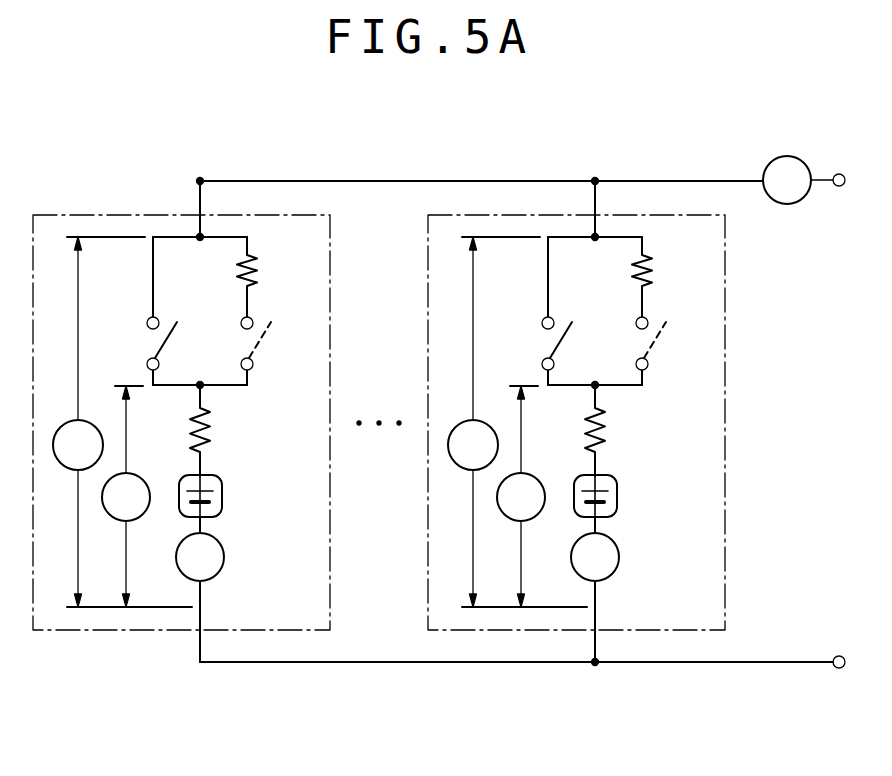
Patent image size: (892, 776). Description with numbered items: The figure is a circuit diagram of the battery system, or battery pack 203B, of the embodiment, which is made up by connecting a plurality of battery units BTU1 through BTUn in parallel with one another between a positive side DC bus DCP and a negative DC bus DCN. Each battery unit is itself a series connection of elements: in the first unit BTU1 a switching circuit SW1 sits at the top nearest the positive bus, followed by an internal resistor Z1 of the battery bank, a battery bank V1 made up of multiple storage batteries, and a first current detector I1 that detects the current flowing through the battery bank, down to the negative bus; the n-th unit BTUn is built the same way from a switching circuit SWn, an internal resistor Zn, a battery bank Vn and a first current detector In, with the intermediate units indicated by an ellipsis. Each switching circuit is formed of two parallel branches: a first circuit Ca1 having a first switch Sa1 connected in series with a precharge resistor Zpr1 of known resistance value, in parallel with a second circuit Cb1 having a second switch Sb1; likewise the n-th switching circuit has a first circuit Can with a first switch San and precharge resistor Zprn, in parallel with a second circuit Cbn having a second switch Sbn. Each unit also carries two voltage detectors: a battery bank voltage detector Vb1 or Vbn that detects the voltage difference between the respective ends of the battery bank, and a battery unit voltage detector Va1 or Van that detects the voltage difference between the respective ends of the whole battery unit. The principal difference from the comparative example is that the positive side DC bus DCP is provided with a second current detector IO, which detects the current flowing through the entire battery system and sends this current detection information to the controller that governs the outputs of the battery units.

The battery pack 203B is at (552, 123).
The positive side DC bus DCP is at (382, 178).
The negative DC bus DCN is at (380, 663).
The second current detector IO is at (804, 180).
The battery unit BTU1 is at (194, 420).
The battery unit BTUn is at (589, 422).
The switching circuit SW1 is at (225, 285).
The switching circuit SWn is at (620, 285).
The second switch Sb1 is at (138, 311).
The first switch Sa1 is at (233, 351).
The second circuit Cb1 is at (144, 299).
The first circuit Ca1 is at (239, 299).
The precharge resistor Zpr1 is at (278, 277).
The internal resistor Z1 is at (218, 430).
The battery bank V1 is at (220, 496).
The first current detector I1 is at (200, 589).
The battery unit voltage detector Va1 is at (122, 422).
The battery bank voltage detector Vb1 is at (126, 496).
The second switch Sbn is at (533, 311).
The first switch San is at (628, 351).
The second circuit Cbn is at (539, 299).
The first circuit Can is at (634, 299).
The precharge resistor Zprn is at (673, 277).
The internal resistor Zn is at (613, 430).
The battery bank Vn is at (615, 496).
The first current detector In is at (595, 589).
The battery unit voltage detector Van is at (517, 422).
The battery bank voltage detector Vbn is at (521, 496).